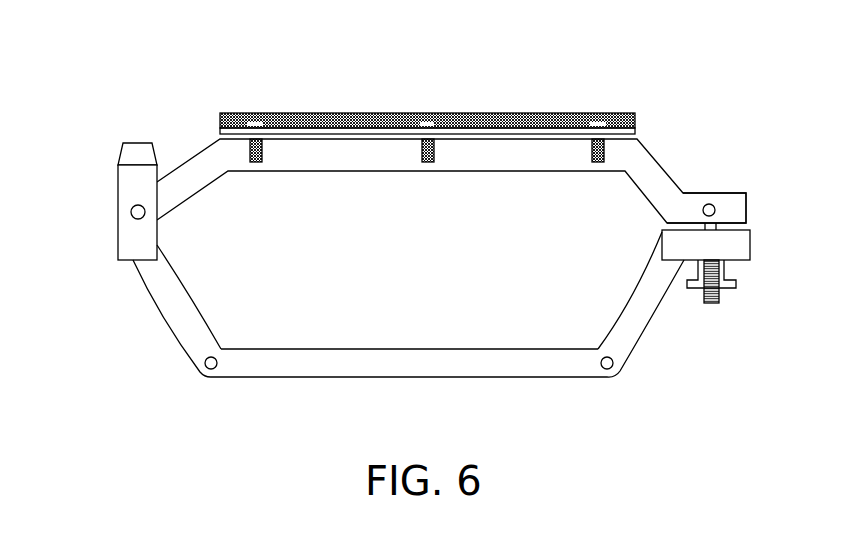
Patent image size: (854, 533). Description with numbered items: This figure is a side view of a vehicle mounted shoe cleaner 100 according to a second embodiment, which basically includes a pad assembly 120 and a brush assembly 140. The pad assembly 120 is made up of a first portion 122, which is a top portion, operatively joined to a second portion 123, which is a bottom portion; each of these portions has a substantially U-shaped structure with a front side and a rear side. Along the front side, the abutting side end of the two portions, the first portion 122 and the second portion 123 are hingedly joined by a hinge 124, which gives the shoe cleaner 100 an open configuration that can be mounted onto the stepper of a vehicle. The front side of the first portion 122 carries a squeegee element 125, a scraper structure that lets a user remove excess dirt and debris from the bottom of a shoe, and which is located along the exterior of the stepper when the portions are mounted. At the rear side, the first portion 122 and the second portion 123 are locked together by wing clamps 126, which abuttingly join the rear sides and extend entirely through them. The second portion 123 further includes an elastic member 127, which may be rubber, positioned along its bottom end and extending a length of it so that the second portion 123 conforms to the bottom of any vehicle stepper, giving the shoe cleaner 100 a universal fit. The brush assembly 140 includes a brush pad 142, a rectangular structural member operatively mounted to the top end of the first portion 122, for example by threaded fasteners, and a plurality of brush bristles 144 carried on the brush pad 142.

The vehicle mounted shoe cleaner 100 is at (130, 60).
The pad assembly 120 is at (714, 186).
The first portion 122 is at (315, 172).
The second portion 123 is at (118, 225).
The hinge 124 is at (157, 313).
The squeegee element 125 is at (120, 150).
The wing clamps 126 is at (725, 264).
The elastic member 127 is at (376, 349).
The brush assembly 140 is at (545, 106).
The brush pad 142 is at (478, 128).
The brush bristles 144 is at (323, 113).